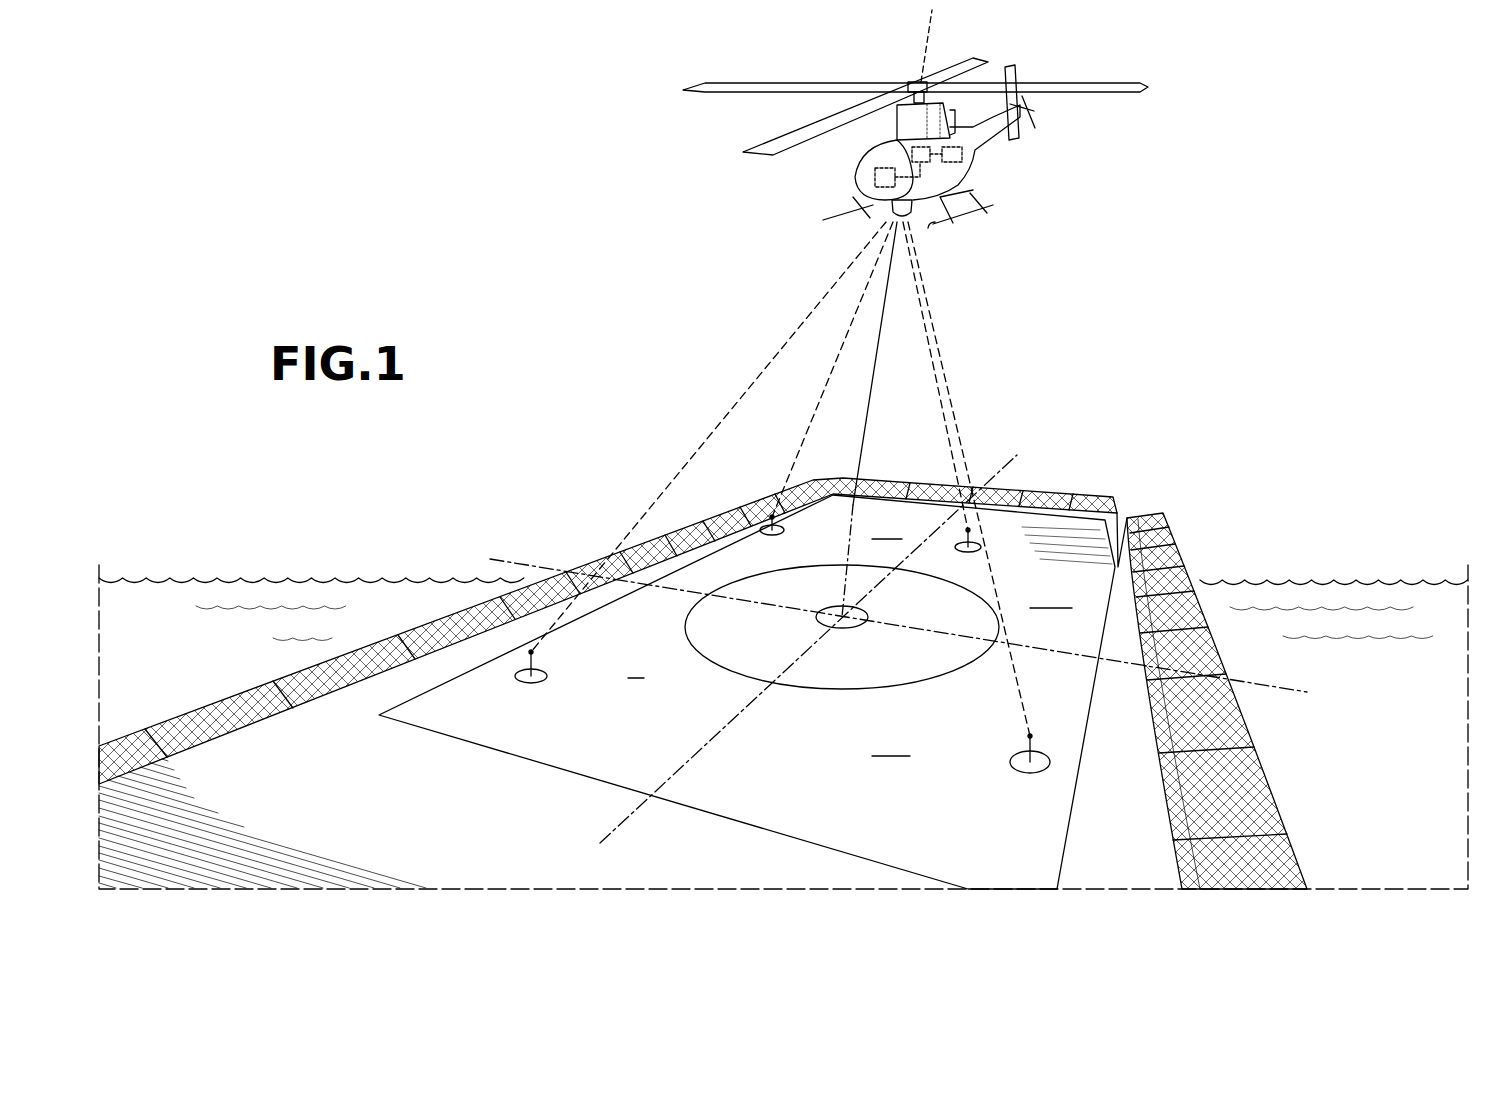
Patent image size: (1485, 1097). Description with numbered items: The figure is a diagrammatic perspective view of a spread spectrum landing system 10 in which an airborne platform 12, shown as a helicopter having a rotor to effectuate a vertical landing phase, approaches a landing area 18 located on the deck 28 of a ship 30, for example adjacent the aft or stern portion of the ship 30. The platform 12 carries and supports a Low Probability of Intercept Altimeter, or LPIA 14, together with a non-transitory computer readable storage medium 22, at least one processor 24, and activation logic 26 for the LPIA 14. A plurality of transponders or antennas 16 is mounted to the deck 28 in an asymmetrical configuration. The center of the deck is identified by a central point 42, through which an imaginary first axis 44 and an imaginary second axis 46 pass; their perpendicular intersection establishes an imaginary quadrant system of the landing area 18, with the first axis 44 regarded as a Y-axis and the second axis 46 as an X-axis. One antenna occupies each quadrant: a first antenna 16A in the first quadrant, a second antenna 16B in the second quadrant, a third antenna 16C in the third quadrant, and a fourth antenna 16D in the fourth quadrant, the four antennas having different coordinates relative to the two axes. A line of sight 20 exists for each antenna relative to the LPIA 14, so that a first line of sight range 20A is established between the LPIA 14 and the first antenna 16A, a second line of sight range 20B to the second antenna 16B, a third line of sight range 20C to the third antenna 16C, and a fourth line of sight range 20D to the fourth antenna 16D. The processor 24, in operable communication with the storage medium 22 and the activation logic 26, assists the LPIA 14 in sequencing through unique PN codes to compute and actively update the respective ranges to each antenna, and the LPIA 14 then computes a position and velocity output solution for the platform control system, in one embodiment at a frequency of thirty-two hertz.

The spread spectrum landing system 10 is at (632, 266).
The platform 12 is at (1104, 86).
The Low Probability of Intercept Altimeter (LPIA) 14 is at (890, 215).
The plurality of transponders or antennas 16 is at (849, 621).
The first antenna 16A is at (535, 679).
The second antenna 16B is at (760, 525).
The third antenna 16C is at (984, 541).
The fourth antenna 16D is at (1024, 769).
The landing area 18 is at (1057, 560).
The line of sight 20 is at (806, 479).
The first line of sight range 20A is at (772, 359).
The second line of sight range 20B is at (838, 353).
The third line of sight range 20C is at (922, 324).
The fourth line of sight range 20D is at (937, 348).
The non-transitory computer readable storage medium 22 is at (912, 151).
The processor 24 is at (962, 151).
The activation logic 26 is at (875, 175).
The deck 28 is at (783, 683).
The ship 30 is at (332, 758).
The central point 42 is at (846, 629).
The first axis 44 is at (613, 827).
The second axis 46 is at (1290, 688).